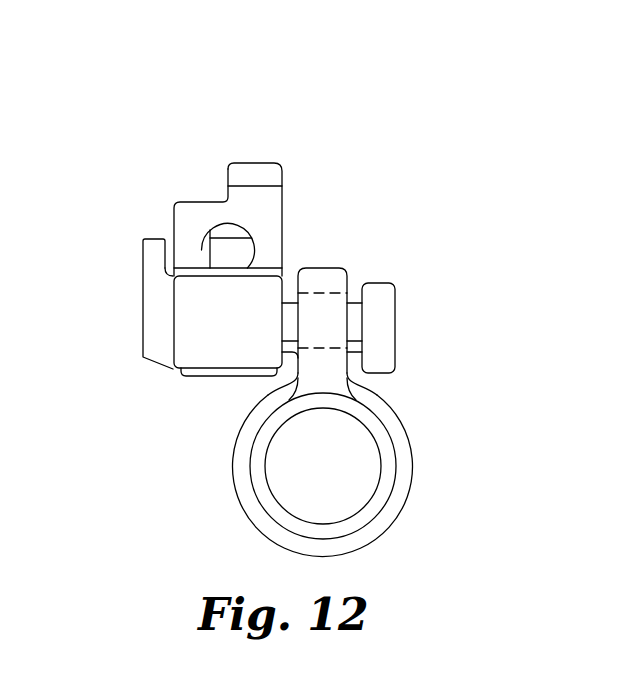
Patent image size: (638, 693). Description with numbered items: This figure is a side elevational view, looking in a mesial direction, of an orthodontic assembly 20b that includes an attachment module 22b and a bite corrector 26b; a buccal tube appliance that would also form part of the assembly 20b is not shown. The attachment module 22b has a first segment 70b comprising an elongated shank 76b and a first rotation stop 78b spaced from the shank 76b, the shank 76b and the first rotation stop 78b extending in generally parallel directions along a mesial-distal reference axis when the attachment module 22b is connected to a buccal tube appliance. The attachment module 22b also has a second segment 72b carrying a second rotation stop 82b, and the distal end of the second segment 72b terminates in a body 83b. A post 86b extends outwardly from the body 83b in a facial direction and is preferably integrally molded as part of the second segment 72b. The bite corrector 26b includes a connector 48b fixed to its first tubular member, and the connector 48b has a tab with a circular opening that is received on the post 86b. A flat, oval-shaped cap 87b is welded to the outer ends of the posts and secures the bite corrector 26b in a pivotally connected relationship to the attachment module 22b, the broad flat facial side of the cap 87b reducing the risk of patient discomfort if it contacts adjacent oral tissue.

The orthodontic assembly 20b is at (158, 105).
The attachment module 22b is at (278, 163).
The bite corrector 26b is at (252, 527).
The connector 48b is at (412, 478).
The first segment 70b is at (187, 200).
The second segment 72b is at (190, 387).
The elongated shank 76b is at (255, 243).
The first rotation stop 78b is at (243, 163).
The second rotation stop 82b is at (155, 283).
The body 83b is at (190, 340).
The post 86b is at (355, 303).
The cap 87b is at (378, 283).